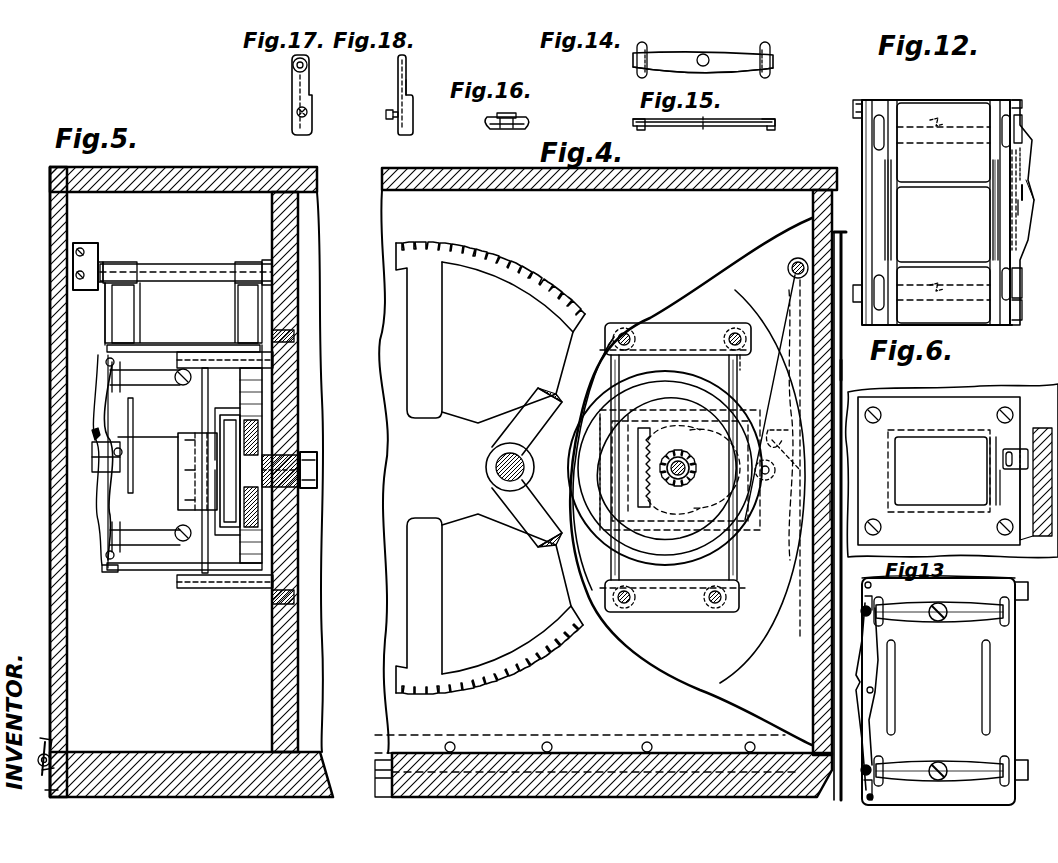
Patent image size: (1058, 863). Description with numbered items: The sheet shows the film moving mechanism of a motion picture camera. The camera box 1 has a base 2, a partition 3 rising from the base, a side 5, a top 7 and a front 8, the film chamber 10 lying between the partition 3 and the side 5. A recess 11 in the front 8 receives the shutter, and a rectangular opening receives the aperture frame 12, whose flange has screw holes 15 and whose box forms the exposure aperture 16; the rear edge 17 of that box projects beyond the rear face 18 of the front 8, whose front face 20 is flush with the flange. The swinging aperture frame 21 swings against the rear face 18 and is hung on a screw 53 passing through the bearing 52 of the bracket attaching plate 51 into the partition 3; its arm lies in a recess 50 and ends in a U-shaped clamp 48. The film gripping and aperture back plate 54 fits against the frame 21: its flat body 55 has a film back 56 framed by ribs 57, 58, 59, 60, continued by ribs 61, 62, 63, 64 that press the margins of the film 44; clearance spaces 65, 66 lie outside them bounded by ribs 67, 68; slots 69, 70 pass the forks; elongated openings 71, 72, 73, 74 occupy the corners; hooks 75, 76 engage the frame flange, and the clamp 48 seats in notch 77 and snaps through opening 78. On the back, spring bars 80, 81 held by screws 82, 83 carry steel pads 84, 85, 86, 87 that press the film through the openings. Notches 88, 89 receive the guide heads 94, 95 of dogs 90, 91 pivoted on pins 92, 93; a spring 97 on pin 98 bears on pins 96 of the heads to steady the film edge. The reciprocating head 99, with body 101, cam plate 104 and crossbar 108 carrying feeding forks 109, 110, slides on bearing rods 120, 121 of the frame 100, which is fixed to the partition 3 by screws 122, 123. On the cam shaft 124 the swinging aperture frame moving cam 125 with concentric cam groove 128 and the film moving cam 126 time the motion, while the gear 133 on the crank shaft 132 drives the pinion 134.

In FIG. 5, the camera box 1 is at (186, 173).
In FIG. 4, the camera box 1 is at (728, 170).
In FIG. 5, the base 2 is at (190, 752).
In FIG. 4, the base 2 is at (565, 753).
In FIG. 5, the partition 3 is at (300, 228).
In FIG. 5, the side 5 is at (58, 403).
In FIG. 5, the top 7 is at (235, 175).
In FIG. 4, the top 7 is at (475, 175).
In FIG. 4, the front 8 is at (848, 372).
In FIG. 6, the front 8 is at (850, 372).
In FIG. 5, the film chamber 10 is at (80, 558).
In FIG. 4, the recess 11 is at (834, 336).
In FIG. 4, the aperture frame 12 is at (832, 505).
In FIG. 6, the aperture frame 12 is at (937, 405).
In FIG. 14, the screw holes 15 is at (740, 75).
In FIG. 4, the exposure aperture 16 is at (770, 486).
In FIG. 15, the exposure aperture 16 is at (696, 139).
In FIG. 6, the exposure aperture 16 is at (928, 447).
In FIG. 18, the rear edge 17 is at (392, 90).
In FIG. 4, the rear face 18 is at (812, 698).
In FIG. 17, the rear face 18 is at (351, 76).
In FIG. 4, the front face 20 is at (818, 640).
In FIG. 5, the swinging aperture frame 21 is at (100, 328).
In FIG. 4, the swinging aperture frame 21 is at (777, 315).
In FIG. 4, the film 44 is at (772, 638).
In FIG. 6, the U-shaped clamp 48 is at (1012, 460).
In FIG. 5, the recess 50 is at (128, 577).
In FIG. 5, the bracket attaching plate 51 is at (92, 243).
In FIG. 5, the bearing 52 is at (100, 260).
In FIG. 5, the screw 53 is at (78, 286).
In FIG. 5, the film gripping and aperture back plate 54 is at (152, 348).
In FIG. 4, the film gripping and aperture back plate 54 is at (789, 360).
In FIG. 12, the film gripping and aperture back plate 54 is at (1026, 124).
In FIG. 6, the film gripping and aperture back plate 54 is at (996, 492).
In FIG. 13, the film gripping and aperture back plate 54 is at (1028, 678).
In FIG. 12, the flat body 55 is at (1026, 165).
In FIG. 12, the film back 56 is at (1015, 210).
In FIG. 12, the rib 57 is at (918, 180).
In FIG. 12, the rib 58 is at (915, 260).
In FIG. 12, the rib 59 is at (892, 218).
In FIG. 12, the rib 60 is at (993, 198).
In FIG. 12, the rib 61 is at (886, 133).
In FIG. 12, the rib 62 is at (992, 113).
In FIG. 12, the rib 63 is at (893, 290).
In FIG. 12, the rib 64 is at (990, 270).
In FIG. 12, the clearance space 65 is at (878, 150).
In FIG. 12, the clearance space 66 is at (1002, 328).
In FIG. 12, the rib 67 is at (866, 185).
In FIG. 12, the rib 68 is at (1020, 103).
In FIG. 12, the slot 69 is at (890, 240).
In FIG. 5, the slot 70 is at (130, 493).
In FIG. 12, the slot 70 is at (1000, 215).
In FIG. 12, the elongated opening 71 is at (900, 106).
In FIG. 6, the elongated opening 71 is at (992, 446).
In FIG. 12, the elongated opening 72 is at (1005, 125).
In FIG. 12, the elongated opening 73 is at (876, 312).
In FIG. 12, the elongated opening 74 is at (1022, 310).
In FIG. 12, the hook 75 is at (856, 112).
In FIG. 4, the hook 76 is at (797, 268).
In FIG. 12, the hook 76 is at (860, 280).
In FIG. 12, the notch 77 is at (1000, 230).
In FIG. 12, the opening 78 is at (1022, 190).
In FIG. 14, the spring bar 80 is at (720, 57).
In FIG. 13, the spring bar 80 is at (950, 612).
In FIG. 13, the spring bar 81 is at (905, 768).
In FIG. 13, the screw 82 is at (935, 620).
In FIG. 13, the screw 83 is at (950, 766).
In FIG. 13, the steel pad 84 is at (882, 608).
In FIG. 13, the steel pad 85 is at (1010, 604).
In FIG. 13, the steel pad 86 is at (882, 760).
In FIG. 13, the steel pad 87 is at (1010, 760).
In FIG. 12, the notch 88 is at (1022, 140).
In FIG. 12, the notch 89 is at (1022, 285).
In FIG. 18, the dog 90 is at (412, 80).
In FIG. 13, the dog 90 is at (866, 604).
In FIG. 13, the dog 91 is at (866, 786).
In FIG. 13, the pin 92 is at (865, 580).
In FIG. 13, the pin 93 is at (876, 797).
In FIG. 13, the guide head 94 is at (866, 614).
In FIG. 13, the guide head 95 is at (864, 768).
In FIG. 17, the pin 96 is at (310, 110).
In FIG. 18, the pin 96 is at (385, 116).
In FIG. 5, the spring 97 is at (118, 476).
In FIG. 13, the spring 97 is at (876, 664).
In FIG. 5, the pin 98 is at (122, 452).
In FIG. 13, the pin 98 is at (873, 690).
In FIG. 5, the reciprocating head 99 is at (173, 502).
In FIG. 4, the reciprocating head 99 is at (619, 504).
In FIG. 5, the frame 100 is at (231, 599).
In FIG. 4, the frame 100 is at (697, 329).
In FIG. 5, the body 101 is at (195, 485).
In FIG. 5, the cam plate 104 is at (258, 382).
In FIG. 4, the cam plate 104 is at (598, 411).
In FIG. 5, the crossbar 108 is at (145, 437).
In FIG. 4, the feeding fork 109 is at (785, 424).
In FIG. 5, the feeding fork 110 is at (92, 428).
In FIG. 4, the bearing rod 120 is at (738, 577).
In FIG. 5, the bearing rod 121 is at (203, 403).
In FIG. 4, the bearing rod 121 is at (610, 571).
In FIG. 5, the screw 122 is at (295, 338).
In FIG. 4, the screw 122 is at (635, 333).
In FIG. 5, the screw 123 is at (298, 600).
In FIG. 4, the screw 123 is at (624, 600).
In FIG. 5, the cam shaft 124 is at (318, 466).
In FIG. 4, the cam shaft 124 is at (688, 464).
In FIG. 5, the swinging aperture frame moving cam 125 is at (268, 403).
In FIG. 4, the swinging aperture frame moving cam 125 is at (570, 469).
In FIG. 5, the film moving cam 126 is at (248, 504).
In FIG. 4, the film moving cam 126 is at (686, 511).
In FIG. 4, the concentric cam groove 128 is at (754, 468).
In FIG. 4, the crank shaft 132 is at (510, 462).
In FIG. 4, the gear 133 is at (525, 282).
In FIG. 4, the pinion 134 is at (694, 482).